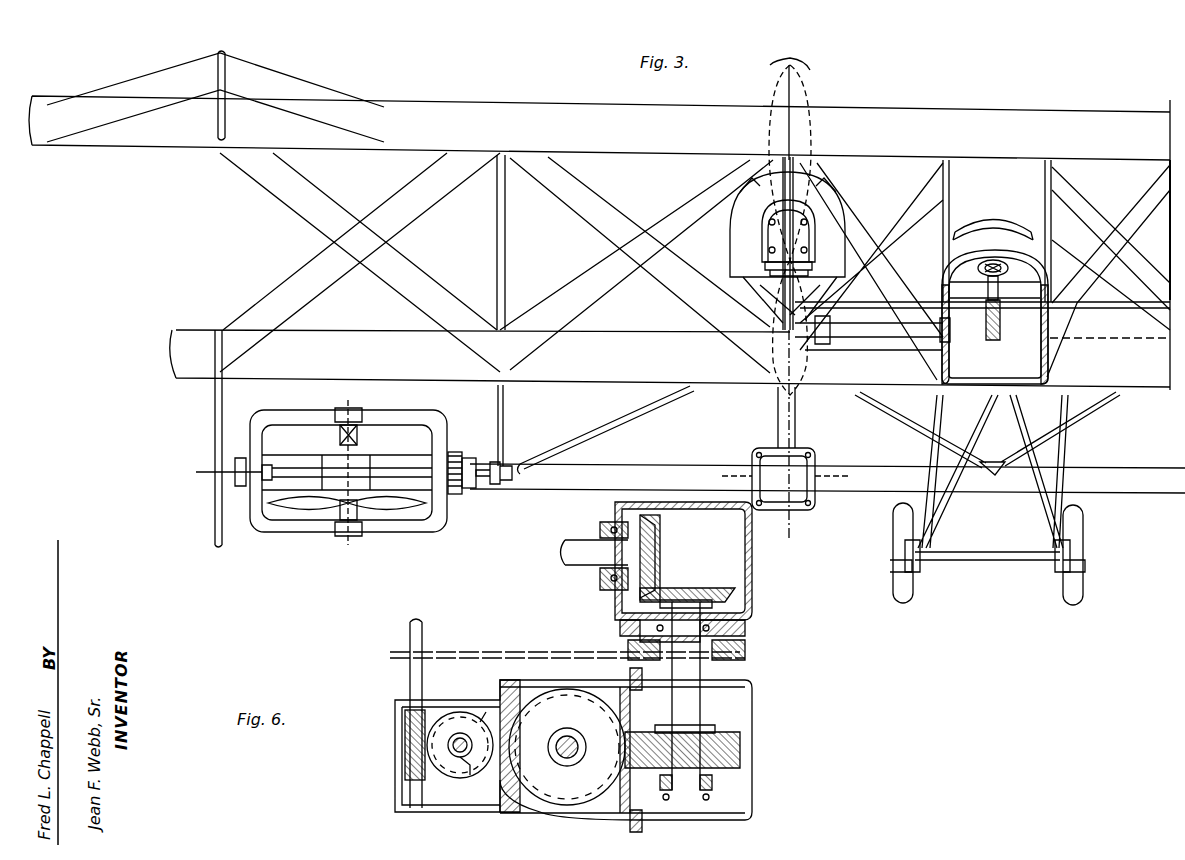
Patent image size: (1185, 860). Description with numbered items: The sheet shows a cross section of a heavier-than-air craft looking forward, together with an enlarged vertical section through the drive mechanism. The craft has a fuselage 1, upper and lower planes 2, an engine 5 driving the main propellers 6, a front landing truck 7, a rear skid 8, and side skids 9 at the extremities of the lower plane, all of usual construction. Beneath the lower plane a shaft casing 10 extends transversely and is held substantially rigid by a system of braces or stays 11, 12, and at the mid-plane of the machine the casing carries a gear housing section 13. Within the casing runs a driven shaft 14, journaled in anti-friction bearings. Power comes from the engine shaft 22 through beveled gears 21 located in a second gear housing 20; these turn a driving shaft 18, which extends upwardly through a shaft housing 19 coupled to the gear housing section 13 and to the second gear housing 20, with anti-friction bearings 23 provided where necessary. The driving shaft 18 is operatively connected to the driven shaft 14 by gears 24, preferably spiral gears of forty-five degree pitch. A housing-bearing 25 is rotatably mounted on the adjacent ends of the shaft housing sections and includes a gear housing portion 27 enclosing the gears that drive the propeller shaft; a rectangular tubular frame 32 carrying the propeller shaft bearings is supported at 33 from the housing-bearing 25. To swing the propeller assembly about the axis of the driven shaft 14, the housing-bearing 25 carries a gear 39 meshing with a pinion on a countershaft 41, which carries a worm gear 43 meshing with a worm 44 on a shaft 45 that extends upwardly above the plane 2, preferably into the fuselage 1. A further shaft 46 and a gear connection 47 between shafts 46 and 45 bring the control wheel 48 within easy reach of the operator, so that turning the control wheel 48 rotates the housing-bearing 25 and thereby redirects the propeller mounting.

In FIG. 3, the fuselage 1 is at (1044, 300).
In FIG. 3, the planes 2 is at (599, 220).
In FIG. 3, the engine 5 is at (746, 216).
In FIG. 3, the main propellers 6 is at (822, 90).
In FIG. 3, the front landing truck 7 is at (196, 472).
In FIG. 3, the rear skid 8 is at (723, 476).
In FIG. 3, the side skids 9 is at (214, 517).
In FIG. 3, the shaft casing 10 is at (614, 466).
In FIG. 3, the braces or stays 11 is at (497, 415).
In FIG. 3, the braces or stays 12 is at (912, 420).
In FIG. 3, the gear housing section 13 is at (795, 460).
In FIG. 6, the driven shaft 14 is at (574, 740).
In FIG. 6, the driving shaft 18 is at (712, 678).
In FIG. 3, the shaft housing 19 is at (778, 420).
In FIG. 3, the second gear housing 20 is at (766, 243).
In FIG. 6, the second gear housing 20 is at (722, 572).
In FIG. 6, the beveled gears 21 is at (660, 560).
In FIG. 6, the engine shaft 22 is at (588, 546).
In FIG. 6, the anti-friction bearings 23 is at (745, 612).
In FIG. 6, the gears 24 is at (628, 730).
In FIG. 3, the housing-bearing 25 is at (292, 490).
In FIG. 3, the gear housing portion 27 is at (372, 472).
In FIG. 3, the rectangular tubular frame 32 is at (318, 412).
In FIG. 3, the support 33 is at (270, 468).
In FIG. 3, the gear 39 is at (462, 458).
In FIG. 6, the countershaft 41 is at (480, 790).
In FIG. 6, the worm gear 43 is at (462, 712).
In FIG. 6, the worm 44 is at (405, 746).
In FIG. 6, the shaft 45 is at (410, 632).
In FIG. 3, the shaft 46 is at (996, 300).
In FIG. 3, the gear connection 47 is at (1006, 320).
In FIG. 3, the control wheel 48 is at (1005, 240).